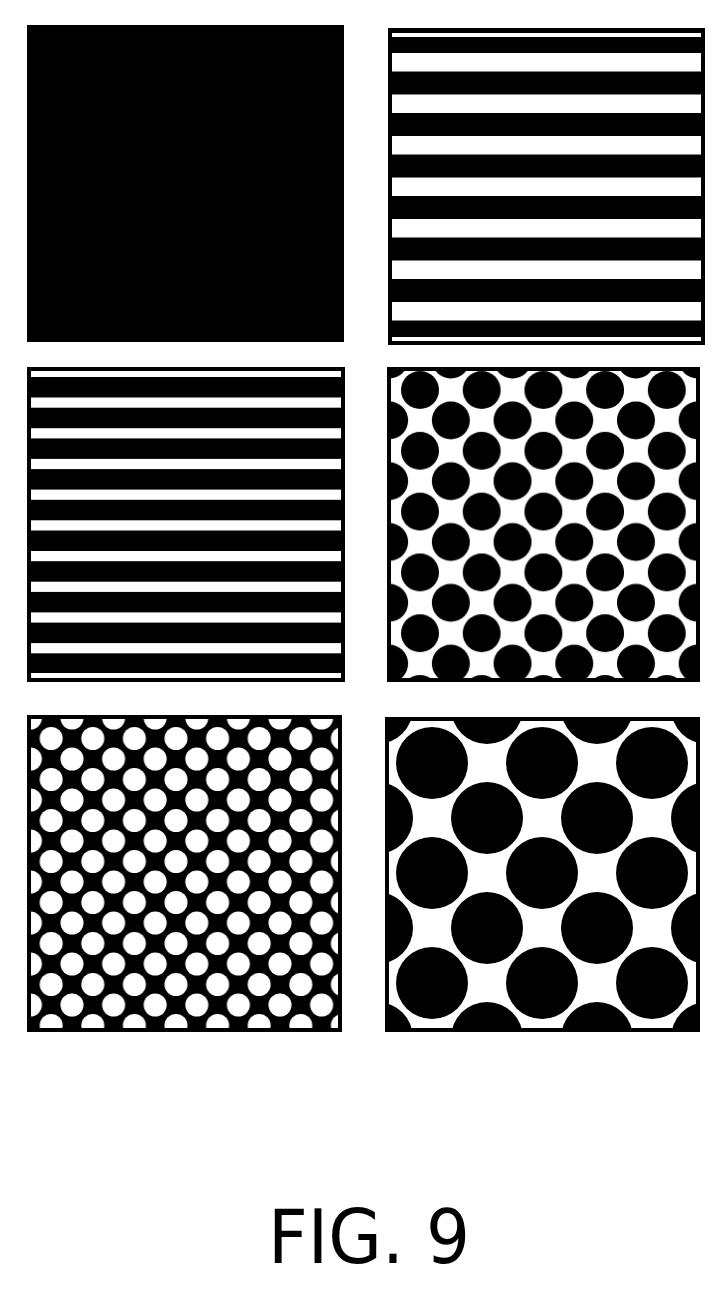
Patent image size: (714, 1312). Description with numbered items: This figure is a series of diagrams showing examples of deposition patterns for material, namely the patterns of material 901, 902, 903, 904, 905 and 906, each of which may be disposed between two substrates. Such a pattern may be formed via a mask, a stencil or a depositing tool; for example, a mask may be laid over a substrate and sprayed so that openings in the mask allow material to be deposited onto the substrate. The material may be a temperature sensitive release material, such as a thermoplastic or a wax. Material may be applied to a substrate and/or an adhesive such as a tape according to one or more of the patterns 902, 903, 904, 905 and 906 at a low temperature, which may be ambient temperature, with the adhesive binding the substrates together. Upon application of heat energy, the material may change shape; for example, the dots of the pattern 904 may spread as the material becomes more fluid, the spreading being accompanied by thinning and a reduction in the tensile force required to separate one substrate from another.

The pattern of material 901 is at (266, 84).
The pattern of material 902 is at (638, 86).
The pattern of material 903 is at (266, 434).
The pattern of material 904 is at (622, 429).
The pattern of material 905 is at (266, 780).
The pattern of material 906 is at (659, 773).